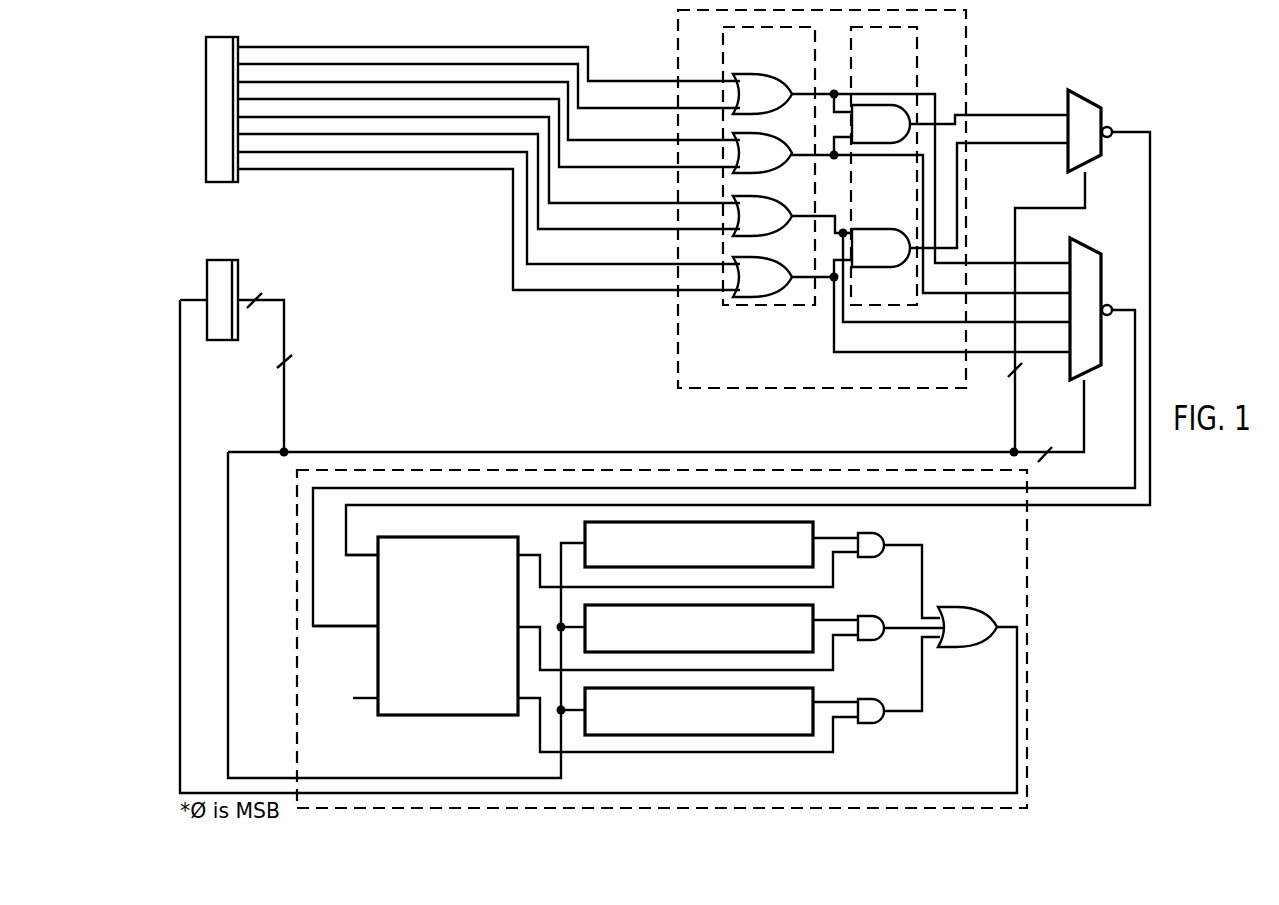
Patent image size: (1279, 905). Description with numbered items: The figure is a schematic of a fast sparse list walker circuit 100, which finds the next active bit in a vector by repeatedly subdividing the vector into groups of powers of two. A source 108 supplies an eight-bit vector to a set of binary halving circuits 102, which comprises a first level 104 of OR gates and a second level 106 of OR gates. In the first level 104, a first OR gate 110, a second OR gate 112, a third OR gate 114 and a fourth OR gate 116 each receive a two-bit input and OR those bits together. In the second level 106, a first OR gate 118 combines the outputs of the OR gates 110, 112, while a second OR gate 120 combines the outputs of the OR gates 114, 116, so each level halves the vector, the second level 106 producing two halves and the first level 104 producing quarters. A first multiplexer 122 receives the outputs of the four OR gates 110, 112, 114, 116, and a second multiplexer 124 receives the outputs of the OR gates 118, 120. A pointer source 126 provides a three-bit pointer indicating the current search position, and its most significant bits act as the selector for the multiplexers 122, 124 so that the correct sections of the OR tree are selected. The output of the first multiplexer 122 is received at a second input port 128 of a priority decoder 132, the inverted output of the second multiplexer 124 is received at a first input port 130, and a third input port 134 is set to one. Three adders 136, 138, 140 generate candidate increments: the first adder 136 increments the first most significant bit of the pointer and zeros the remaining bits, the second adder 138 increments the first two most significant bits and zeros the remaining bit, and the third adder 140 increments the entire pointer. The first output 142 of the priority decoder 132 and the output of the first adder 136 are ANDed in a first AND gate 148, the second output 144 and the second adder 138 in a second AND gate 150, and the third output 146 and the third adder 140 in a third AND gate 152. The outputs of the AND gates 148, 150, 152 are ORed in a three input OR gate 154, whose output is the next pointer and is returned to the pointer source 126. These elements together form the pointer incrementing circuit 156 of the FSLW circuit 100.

The fast sparse list walker circuit 100 is at (652, 51).
The set of binary halving circuits 102 is at (678, 355).
The first level of OR gates 104 is at (772, 307).
The second level of OR gates 106 is at (917, 68).
The source 108 is at (218, 183).
The first OR gate 110 is at (748, 73).
The second OR gate 112 is at (748, 134).
The third OR gate 114 is at (749, 196).
The fourth OR gate 116 is at (749, 256).
The first OR gate of the second level 118 is at (877, 144).
The second OR gate of the second level 120 is at (861, 228).
The first multiplexer 122 is at (1103, 273).
The second multiplexer 124 is at (1104, 116).
The pointer source 126 is at (218, 345).
The second input port 128 is at (380, 622).
The first input port 130 is at (377, 562).
The priority decoder 132 is at (447, 718).
The third input port 134 is at (380, 697).
The first adder 136 is at (798, 522).
The second adder 138 is at (798, 606).
The third adder 140 is at (798, 688).
The first output 142 is at (521, 548).
The second output 144 is at (517, 622).
The third output 146 is at (517, 697).
The first AND gate 148 is at (880, 534).
The second AND gate 150 is at (878, 614).
The third AND gate 152 is at (880, 724).
The three input OR gate 154 is at (962, 607).
The pointer incrementing circuit 156 is at (1028, 595).